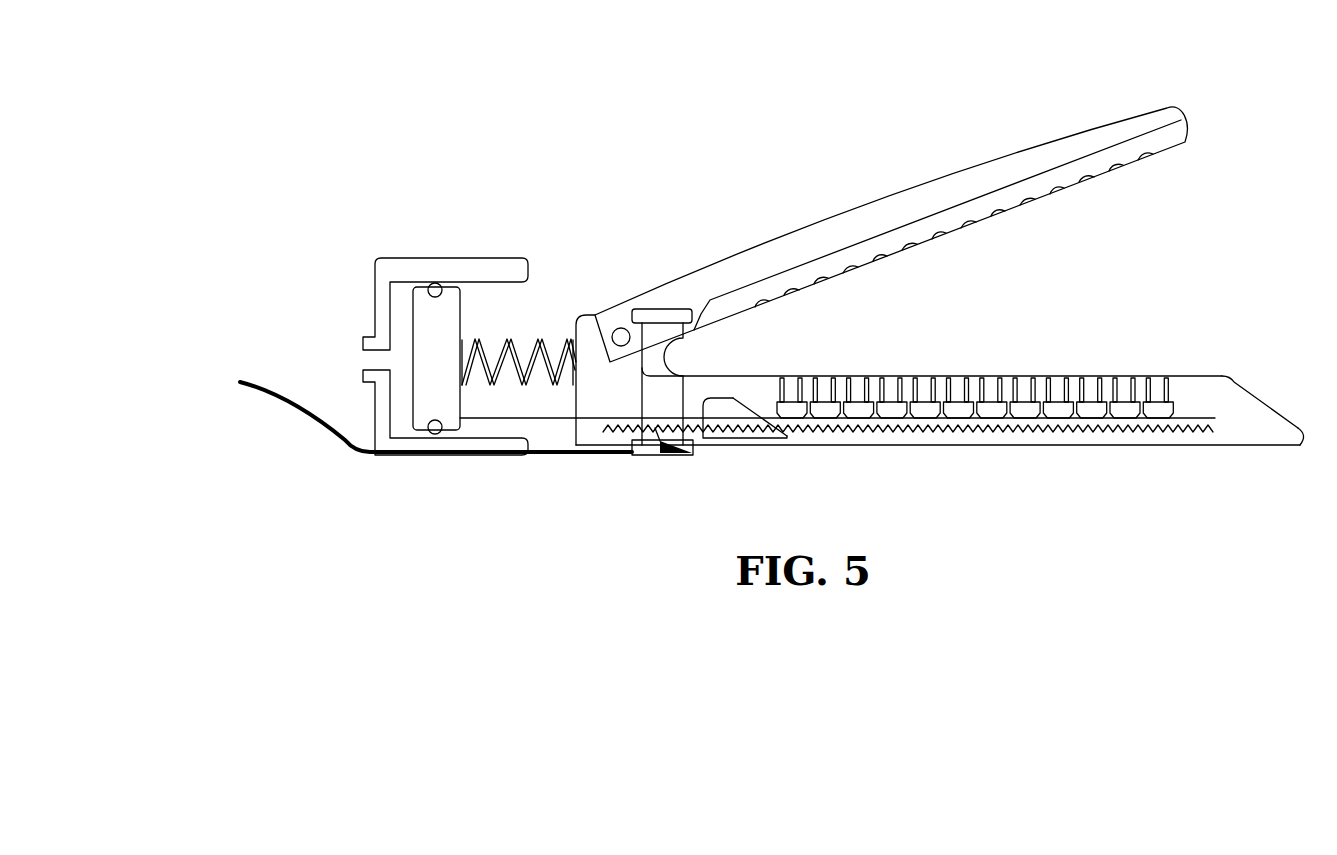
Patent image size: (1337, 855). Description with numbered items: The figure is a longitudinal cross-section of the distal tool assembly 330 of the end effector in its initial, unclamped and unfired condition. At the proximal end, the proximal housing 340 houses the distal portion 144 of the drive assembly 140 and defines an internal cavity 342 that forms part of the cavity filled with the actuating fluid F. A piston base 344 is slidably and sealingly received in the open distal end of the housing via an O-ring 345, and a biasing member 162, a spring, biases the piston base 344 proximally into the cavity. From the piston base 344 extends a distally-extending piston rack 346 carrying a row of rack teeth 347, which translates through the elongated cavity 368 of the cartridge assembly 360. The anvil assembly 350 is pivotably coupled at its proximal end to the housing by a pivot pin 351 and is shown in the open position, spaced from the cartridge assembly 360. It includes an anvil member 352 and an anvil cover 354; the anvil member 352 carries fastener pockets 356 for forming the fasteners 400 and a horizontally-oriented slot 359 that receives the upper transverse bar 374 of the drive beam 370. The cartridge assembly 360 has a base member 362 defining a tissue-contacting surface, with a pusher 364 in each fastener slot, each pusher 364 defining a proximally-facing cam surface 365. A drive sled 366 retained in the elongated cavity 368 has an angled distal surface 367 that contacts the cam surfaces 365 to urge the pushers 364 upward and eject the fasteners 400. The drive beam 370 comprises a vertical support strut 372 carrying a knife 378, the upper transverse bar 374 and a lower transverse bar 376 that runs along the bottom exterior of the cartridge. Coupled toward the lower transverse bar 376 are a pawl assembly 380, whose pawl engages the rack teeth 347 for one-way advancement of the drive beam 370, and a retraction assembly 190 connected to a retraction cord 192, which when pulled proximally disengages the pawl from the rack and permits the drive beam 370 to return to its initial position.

The distal tool assembly 330 is at (780, 96).
The drive assembly 140 is at (414, 246).
The proximal housing 340 is at (400, 268).
The internal cavity 342 is at (400, 320).
The O-ring 345 is at (436, 284).
The piston base 344 is at (430, 385).
The actuating fluid F is at (393, 362).
The distal portion of drive assembly 144 is at (542, 274).
The biasing member 162 is at (520, 340).
The retraction cord 192 is at (262, 386).
The piston rack 346 is at (555, 423).
The drive beam 370 is at (655, 395).
The anvil assembly 350 is at (1052, 123).
The anvil cover 354 is at (843, 232).
The horizontally-oriented slot 359 is at (1048, 163).
The anvil member 352 is at (1172, 137).
The fastener pockets 356 is at (947, 233).
The pivot pin 351 is at (621, 328).
The upper transverse bar 374 is at (667, 310).
The lower transverse bar 376 is at (642, 455).
The knife 378 is at (693, 352).
The vertical support strut 372 is at (683, 392).
The cartridge assembly 360 is at (1125, 456).
The base member 362 is at (1220, 376).
The elongated cavity 368 is at (1240, 420).
The pusher 364 is at (900, 408).
The drive sled 366 is at (737, 410).
The angled distal surface 367 is at (742, 400).
The pawl assembly 380 is at (662, 462).
The retraction assembly 190 is at (700, 452).
The proximally-facing cam surface 365 is at (872, 418).
The rack teeth 347 is at (985, 422).
The fasteners 400 is at (1212, 376).